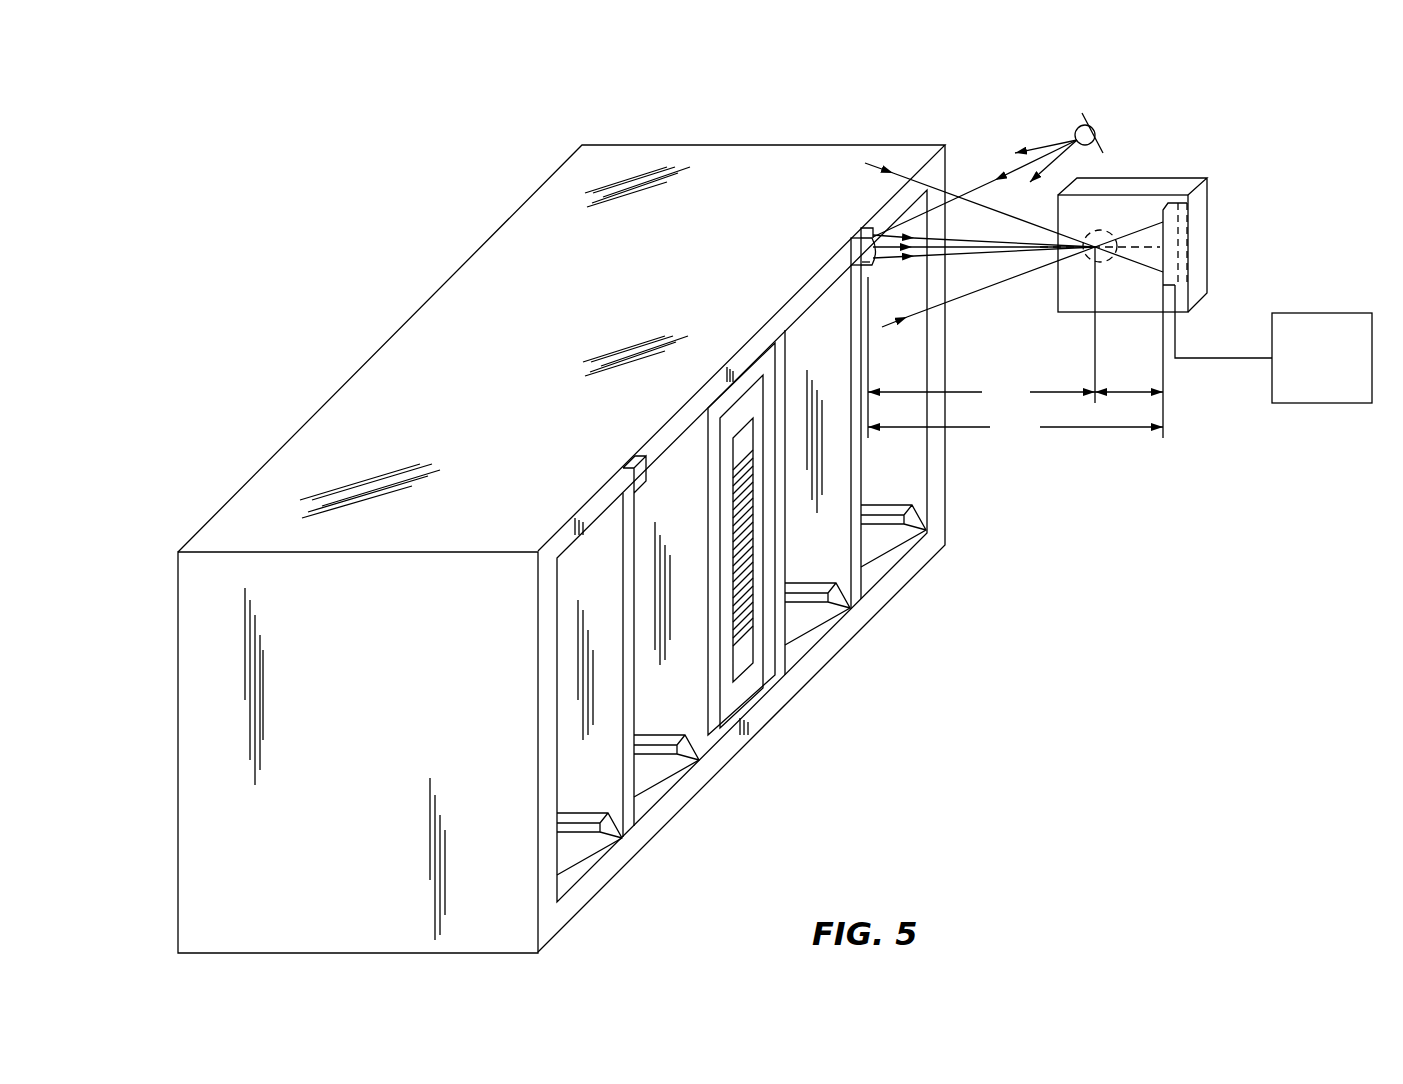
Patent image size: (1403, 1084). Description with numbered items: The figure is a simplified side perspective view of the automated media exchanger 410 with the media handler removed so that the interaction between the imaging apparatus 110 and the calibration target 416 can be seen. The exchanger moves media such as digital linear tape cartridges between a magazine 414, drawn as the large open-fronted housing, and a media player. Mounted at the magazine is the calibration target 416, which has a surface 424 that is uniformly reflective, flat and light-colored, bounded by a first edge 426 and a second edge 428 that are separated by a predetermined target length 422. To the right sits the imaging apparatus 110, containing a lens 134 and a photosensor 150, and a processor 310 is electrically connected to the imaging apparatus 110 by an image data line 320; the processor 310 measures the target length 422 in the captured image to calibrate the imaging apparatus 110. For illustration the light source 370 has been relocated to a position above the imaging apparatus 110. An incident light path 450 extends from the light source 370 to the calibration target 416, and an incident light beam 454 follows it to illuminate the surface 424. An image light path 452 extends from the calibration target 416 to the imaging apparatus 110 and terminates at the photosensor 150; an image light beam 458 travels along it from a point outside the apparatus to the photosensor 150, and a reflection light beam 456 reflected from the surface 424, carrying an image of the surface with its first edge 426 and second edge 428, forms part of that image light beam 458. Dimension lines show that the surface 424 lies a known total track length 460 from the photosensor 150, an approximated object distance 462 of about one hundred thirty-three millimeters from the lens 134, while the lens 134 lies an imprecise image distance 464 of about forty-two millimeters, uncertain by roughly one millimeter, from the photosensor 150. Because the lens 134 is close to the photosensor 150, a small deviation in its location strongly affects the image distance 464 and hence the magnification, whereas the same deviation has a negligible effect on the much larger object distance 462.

The automated media exchanger 410 is at (1102, 563).
The magazine 414 is at (561, 549).
The calibration target 416 is at (842, 392).
The target length 422 is at (810, 358).
The surface 424 is at (857, 236).
The first edge 426 is at (868, 229).
The second edge 428 is at (870, 266).
The incident light path 450 is at (980, 187).
The image light path 452 is at (968, 250).
The incident light beam 454 is at (1037, 138).
The reflection light beam 456 is at (1012, 254).
The image light beam 458 is at (877, 162).
The light source 370 is at (1098, 133).
The imaging apparatus 110 is at (1180, 274).
The lens 134 is at (1100, 243).
The photosensor 150 is at (1196, 245).
The processor 310 is at (1347, 313).
The image data line 320 is at (1237, 360).
The total track length 460 is at (1015, 428).
The object distance 462 is at (981, 357).
The image distance 464 is at (1130, 388).